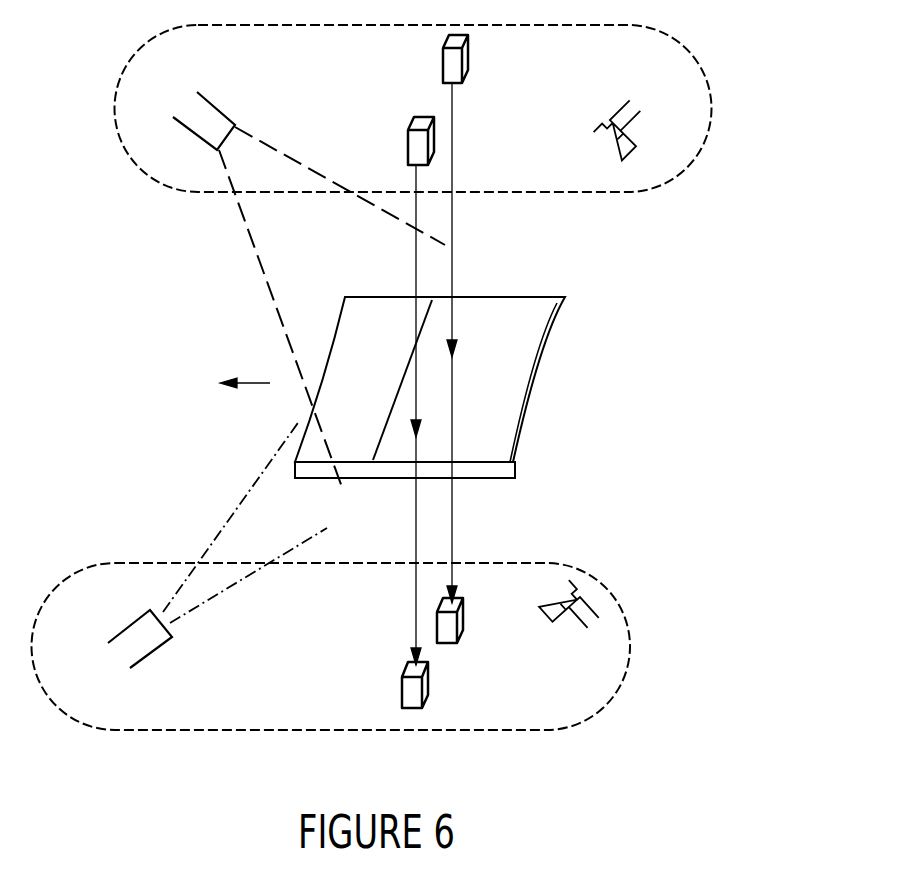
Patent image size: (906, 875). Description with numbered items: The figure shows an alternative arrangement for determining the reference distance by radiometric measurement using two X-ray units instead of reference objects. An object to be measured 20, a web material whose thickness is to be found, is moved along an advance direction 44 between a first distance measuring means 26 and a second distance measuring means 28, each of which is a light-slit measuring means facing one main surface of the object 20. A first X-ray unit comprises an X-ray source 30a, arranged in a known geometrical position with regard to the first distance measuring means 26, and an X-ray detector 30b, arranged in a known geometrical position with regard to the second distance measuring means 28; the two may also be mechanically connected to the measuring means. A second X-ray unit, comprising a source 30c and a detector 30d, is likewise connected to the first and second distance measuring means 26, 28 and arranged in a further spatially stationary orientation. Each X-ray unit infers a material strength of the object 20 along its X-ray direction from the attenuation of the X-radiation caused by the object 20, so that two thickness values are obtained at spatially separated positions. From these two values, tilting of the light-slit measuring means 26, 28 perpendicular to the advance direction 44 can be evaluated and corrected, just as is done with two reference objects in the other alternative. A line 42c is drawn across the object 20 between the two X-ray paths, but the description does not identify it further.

The first distance measuring means 26 is at (712, 113).
The second distance measuring means 28 is at (630, 665).
The object to be measured 20 is at (565, 300).
The partition line / beam splitter boundary 42c is at (405, 373).
The advance direction 44 is at (255, 386).
The X-ray source 30a is at (407, 148).
The X-ray detector 30b is at (402, 690).
The source 30c is at (442, 65).
The detector 30d is at (458, 618).